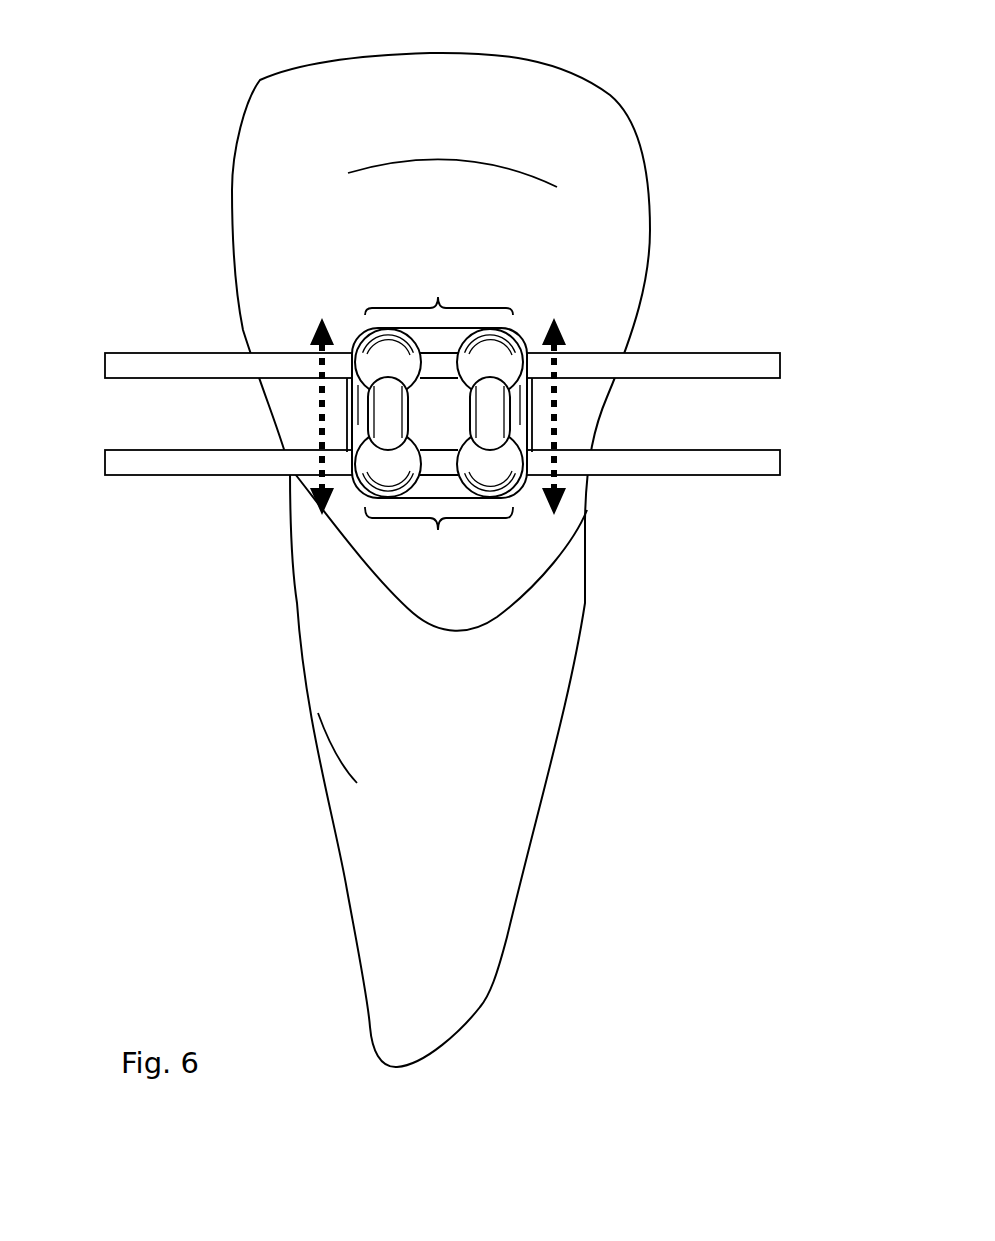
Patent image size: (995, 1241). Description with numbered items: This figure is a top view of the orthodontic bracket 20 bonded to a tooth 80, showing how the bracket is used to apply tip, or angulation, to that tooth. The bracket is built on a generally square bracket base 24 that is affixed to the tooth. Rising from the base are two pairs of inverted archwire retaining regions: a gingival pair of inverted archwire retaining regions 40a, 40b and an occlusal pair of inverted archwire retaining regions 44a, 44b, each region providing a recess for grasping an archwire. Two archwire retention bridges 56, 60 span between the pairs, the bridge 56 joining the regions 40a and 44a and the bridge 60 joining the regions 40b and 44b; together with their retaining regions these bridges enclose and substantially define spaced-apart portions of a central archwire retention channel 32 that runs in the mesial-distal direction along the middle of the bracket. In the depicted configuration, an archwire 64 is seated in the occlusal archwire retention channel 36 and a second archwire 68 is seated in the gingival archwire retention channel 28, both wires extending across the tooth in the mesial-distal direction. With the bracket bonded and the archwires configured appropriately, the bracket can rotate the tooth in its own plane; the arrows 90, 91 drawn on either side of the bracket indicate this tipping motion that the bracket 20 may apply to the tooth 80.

The bracket 20 is at (447, 389).
The bracket base 24 is at (345, 428).
The gingival archwire retention channel 28 is at (405, 599).
The archwire retention channel 32 is at (508, 410).
The occlusal archwire retention channel 36 is at (344, 203).
The inverted archwire retaining region 40a is at (497, 465).
The inverted archwire retaining region 40b is at (377, 470).
The inverted archwire retaining region 44a is at (487, 353).
The inverted archwire retaining region 44b is at (383, 352).
The archwire retention bridge 56 is at (487, 422).
The archwire retention bridge 60 is at (380, 405).
The archwire 64 is at (120, 350).
The archwire 68 is at (205, 480).
The tooth 80 is at (603, 173).
The arrow 90 is at (562, 395).
The arrow 91 is at (313, 318).